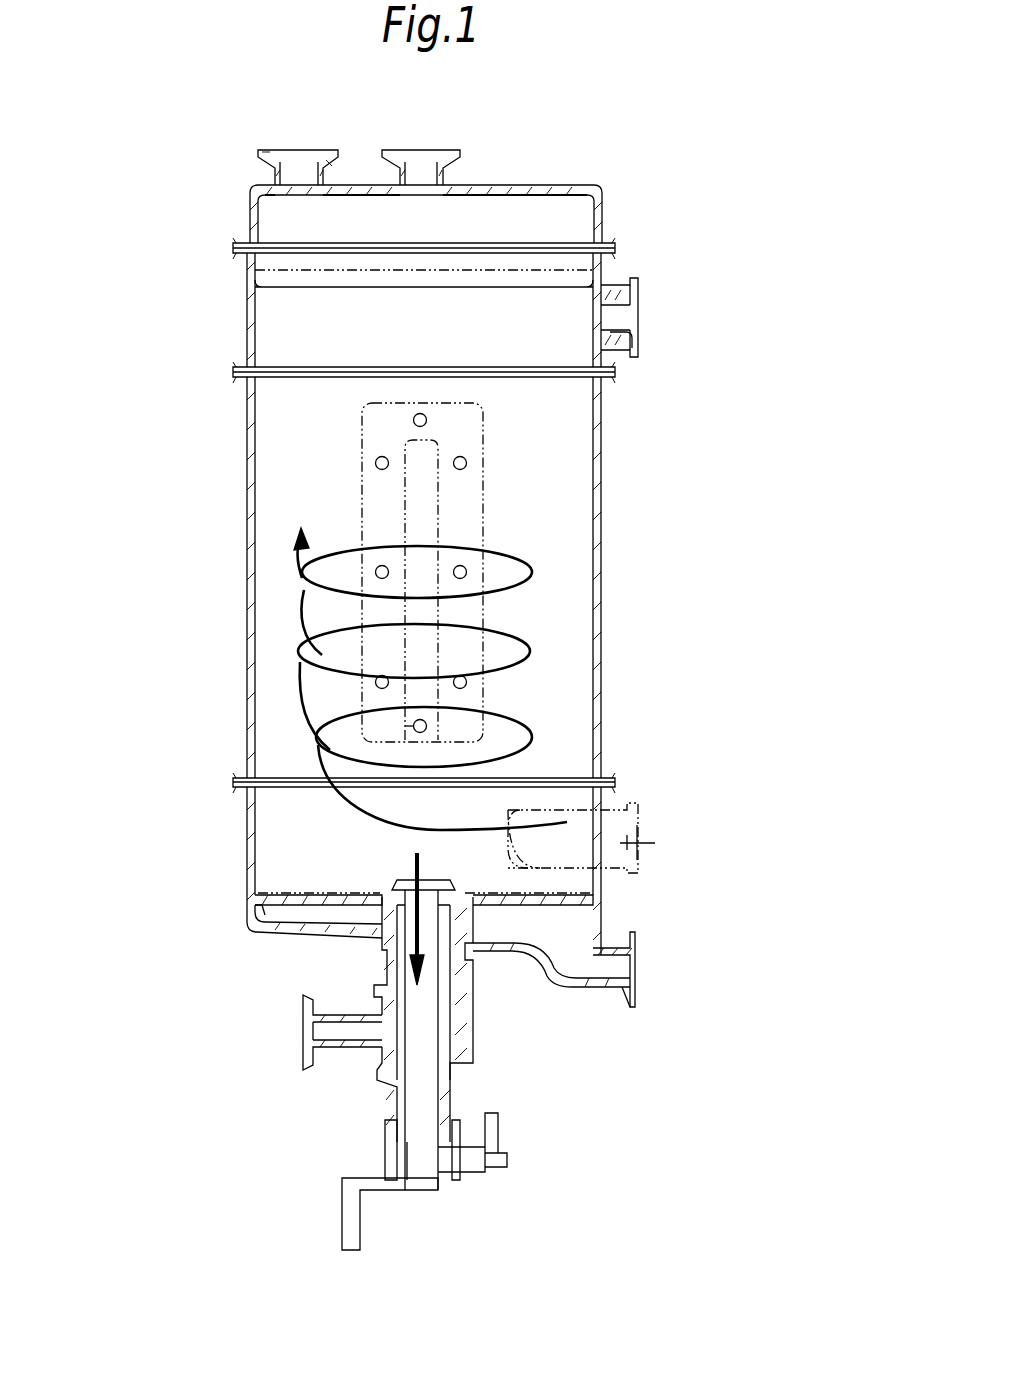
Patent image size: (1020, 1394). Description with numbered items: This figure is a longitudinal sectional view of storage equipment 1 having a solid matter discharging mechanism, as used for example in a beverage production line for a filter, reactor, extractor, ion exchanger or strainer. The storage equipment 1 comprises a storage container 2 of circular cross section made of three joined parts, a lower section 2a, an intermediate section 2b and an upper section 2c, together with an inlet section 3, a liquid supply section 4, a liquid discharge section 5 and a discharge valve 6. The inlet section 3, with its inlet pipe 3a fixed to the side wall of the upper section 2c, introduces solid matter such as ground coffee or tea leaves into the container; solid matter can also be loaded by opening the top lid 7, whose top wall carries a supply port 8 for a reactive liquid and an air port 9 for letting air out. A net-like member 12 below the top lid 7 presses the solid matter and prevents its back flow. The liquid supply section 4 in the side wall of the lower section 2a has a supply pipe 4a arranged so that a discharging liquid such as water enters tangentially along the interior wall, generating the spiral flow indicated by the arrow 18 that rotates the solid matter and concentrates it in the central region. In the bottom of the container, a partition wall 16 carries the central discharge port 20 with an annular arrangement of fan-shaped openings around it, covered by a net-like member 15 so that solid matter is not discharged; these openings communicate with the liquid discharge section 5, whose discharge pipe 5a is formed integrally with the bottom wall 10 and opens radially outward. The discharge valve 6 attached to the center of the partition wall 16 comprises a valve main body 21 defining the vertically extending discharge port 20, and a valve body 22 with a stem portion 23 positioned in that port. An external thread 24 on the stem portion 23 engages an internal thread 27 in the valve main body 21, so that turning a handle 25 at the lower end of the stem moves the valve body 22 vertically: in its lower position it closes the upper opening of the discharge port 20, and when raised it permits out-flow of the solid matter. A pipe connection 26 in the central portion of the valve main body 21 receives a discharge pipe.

The storage equipment 1 is at (690, 178).
The storage container 2 is at (612, 513).
The lower section 2a is at (247, 863).
The intermediate section 2b is at (247, 566).
The upper section 2c is at (248, 302).
The inlet section 3 is at (665, 280).
The inlet pipe 3a is at (620, 338).
The liquid supply section 4 is at (625, 790).
The supply pipe 4a is at (640, 842).
The liquid discharge section 5 is at (655, 937).
The discharge pipe 5a is at (537, 913).
The discharge valve 6 is at (522, 1047).
The top lid 7 is at (602, 203).
The supply port 8 is at (326, 151).
The air port 9 is at (448, 155).
The bottom wall 10 is at (272, 930).
The net-like member 12 is at (592, 270).
The net-like member 15 is at (597, 891).
The partition wall 16 is at (597, 915).
The arrow 18 is at (534, 578).
The discharge port 20 is at (443, 918).
The valve main body 21 is at (394, 976).
The valve body 22 is at (406, 872).
The stem portion 23 is at (432, 1018).
The external thread 24 is at (432, 1108).
The handle 25 is at (353, 1222).
The pipe connection 26 is at (371, 1036).
The internal thread 27 is at (400, 1093).